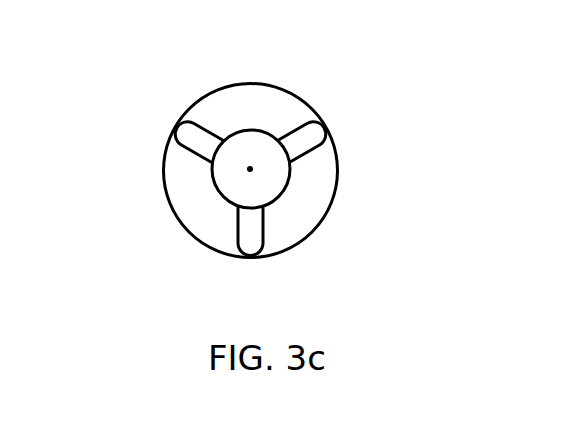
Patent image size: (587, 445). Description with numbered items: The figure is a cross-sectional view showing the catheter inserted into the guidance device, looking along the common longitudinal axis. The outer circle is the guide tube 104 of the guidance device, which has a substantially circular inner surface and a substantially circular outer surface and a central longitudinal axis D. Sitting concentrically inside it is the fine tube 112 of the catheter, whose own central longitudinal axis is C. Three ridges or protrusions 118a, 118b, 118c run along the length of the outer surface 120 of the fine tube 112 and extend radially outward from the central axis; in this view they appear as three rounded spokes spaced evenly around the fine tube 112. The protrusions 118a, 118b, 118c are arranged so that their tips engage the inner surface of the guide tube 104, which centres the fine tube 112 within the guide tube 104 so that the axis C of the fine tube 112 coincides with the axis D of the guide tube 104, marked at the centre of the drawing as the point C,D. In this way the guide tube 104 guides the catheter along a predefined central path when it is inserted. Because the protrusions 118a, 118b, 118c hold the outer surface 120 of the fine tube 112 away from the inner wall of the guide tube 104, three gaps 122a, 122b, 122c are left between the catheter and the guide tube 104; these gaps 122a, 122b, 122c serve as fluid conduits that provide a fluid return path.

The guide tube 104 is at (210, 93).
The fine tube 112 is at (290, 170).
The protrusion 118a is at (203, 143).
The protrusion 118b is at (302, 115).
The protrusion 118c is at (267, 222).
The outer surface 120 is at (263, 133).
The gap 122a is at (242, 108).
The gap 122b is at (318, 185).
The gap 122c is at (207, 215).